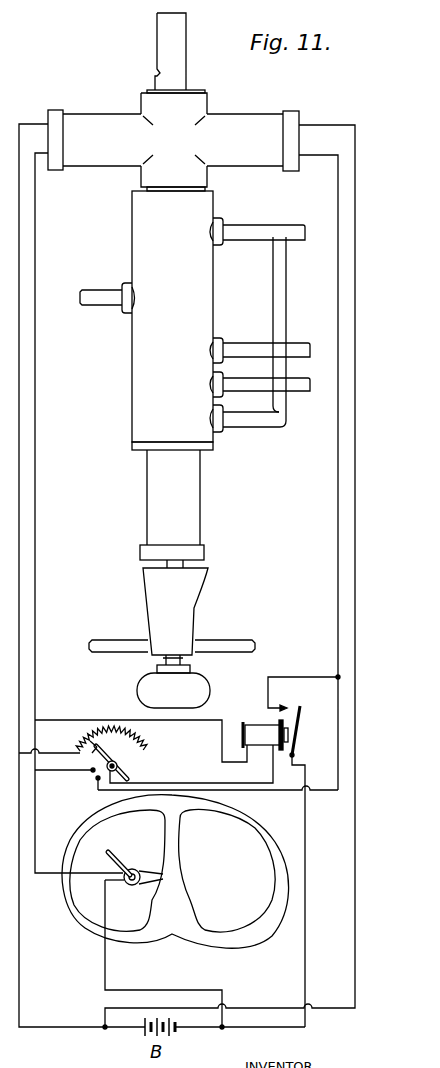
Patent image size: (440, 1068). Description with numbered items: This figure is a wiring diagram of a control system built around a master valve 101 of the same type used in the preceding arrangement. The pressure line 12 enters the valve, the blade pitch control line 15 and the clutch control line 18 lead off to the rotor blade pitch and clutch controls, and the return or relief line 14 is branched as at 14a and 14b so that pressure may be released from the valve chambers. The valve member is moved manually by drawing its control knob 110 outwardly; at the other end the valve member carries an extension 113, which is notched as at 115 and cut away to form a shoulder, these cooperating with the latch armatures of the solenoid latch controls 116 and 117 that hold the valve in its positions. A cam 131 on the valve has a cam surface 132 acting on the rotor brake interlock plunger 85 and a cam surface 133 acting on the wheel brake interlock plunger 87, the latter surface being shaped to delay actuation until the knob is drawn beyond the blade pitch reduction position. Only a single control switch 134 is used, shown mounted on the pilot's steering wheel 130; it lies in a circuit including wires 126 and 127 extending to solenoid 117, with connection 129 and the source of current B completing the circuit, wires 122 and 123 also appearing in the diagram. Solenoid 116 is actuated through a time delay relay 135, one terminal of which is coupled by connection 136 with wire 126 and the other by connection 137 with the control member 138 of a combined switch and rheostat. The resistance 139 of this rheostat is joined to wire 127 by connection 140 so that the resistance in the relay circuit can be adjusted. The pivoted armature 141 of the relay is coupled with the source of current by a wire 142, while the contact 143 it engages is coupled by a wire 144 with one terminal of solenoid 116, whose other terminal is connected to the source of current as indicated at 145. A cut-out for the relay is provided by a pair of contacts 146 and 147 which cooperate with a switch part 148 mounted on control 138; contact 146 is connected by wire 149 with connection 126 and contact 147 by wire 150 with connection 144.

The pressure line 12 is at (96, 295).
The return or relief line 14 is at (305, 240).
The branch of return line 14a is at (262, 238).
The branch release line 14b is at (283, 421).
The blade pitch control line 15 is at (297, 346).
The clutch control line 18 is at (305, 391).
The interlock plunger 85 is at (128, 628).
The wheel brake interlock plunger 87 is at (234, 643).
The master valve 101 is at (130, 398).
The control knob 110 is at (144, 686).
The extension 113 is at (181, 86).
The notch 115 is at (157, 72).
The solenoid latch control 116 is at (259, 115).
The solenoid latch control 117 is at (80, 115).
The wire 122 is at (7, 236).
The wire 123 is at (7, 275).
The wire 126 is at (35, 525).
The wire 127 is at (18, 519).
The connection 129 is at (212, 990).
The steering wheel 130 is at (252, 835).
The cam 131 is at (142, 572).
The cam surface 132 is at (146, 613).
The cam surface 133 is at (200, 587).
The control switch 134 is at (143, 862).
The time delay relay 135 is at (256, 720).
The connection 136 is at (109, 720).
The connection 137 is at (273, 771).
The control member 138 is at (123, 768).
The resistance 139 is at (130, 738).
The connection 140 is at (68, 745).
The pivoted armature 141 is at (299, 722).
The wire 142 is at (307, 897).
The contact 143 is at (291, 694).
The wire 144 is at (337, 488).
The connection 145 is at (355, 492).
The contact 146 is at (92, 772).
The contact 147 is at (97, 781).
The switch part 148 is at (113, 751).
The wire 149 is at (52, 773).
The wire 150 is at (316, 792).